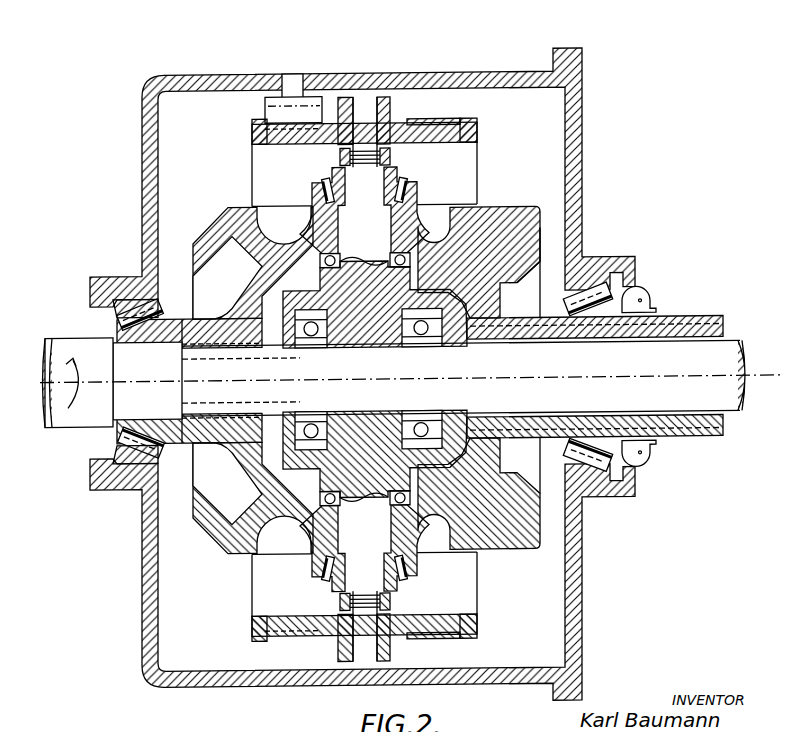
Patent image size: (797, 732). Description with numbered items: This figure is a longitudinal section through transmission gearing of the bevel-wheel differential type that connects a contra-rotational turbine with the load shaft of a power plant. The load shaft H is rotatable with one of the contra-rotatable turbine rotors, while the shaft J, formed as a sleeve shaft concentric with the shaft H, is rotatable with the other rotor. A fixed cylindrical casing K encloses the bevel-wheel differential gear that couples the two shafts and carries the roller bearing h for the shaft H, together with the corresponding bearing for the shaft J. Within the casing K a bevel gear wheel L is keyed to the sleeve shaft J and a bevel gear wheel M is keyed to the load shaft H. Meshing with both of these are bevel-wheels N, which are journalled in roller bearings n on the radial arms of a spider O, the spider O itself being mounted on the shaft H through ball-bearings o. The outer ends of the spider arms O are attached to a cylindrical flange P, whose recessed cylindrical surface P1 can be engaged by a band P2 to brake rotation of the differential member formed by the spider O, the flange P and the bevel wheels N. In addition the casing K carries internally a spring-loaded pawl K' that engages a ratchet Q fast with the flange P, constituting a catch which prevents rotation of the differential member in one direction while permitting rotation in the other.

The fixed cylindrical casing K is at (362, 376).
The spring-loaded pawl K' is at (277, 74).
The ratchet Q is at (265, 114).
The cylindrical flange P is at (390, 102).
The recessed cylindrical surface P1 is at (470, 141).
The band P2 is at (447, 123).
The roller bearings n is at (402, 181).
The spider O is at (376, 245).
The ball-bearings o is at (402, 331).
The bevel gear wheel M is at (240, 291).
The bevel-wheels N is at (507, 212).
The bevel gear wheel L is at (534, 262).
The sleeve shaft J is at (632, 300).
The roller bearing h is at (127, 300).
The load shaft H is at (700, 405).